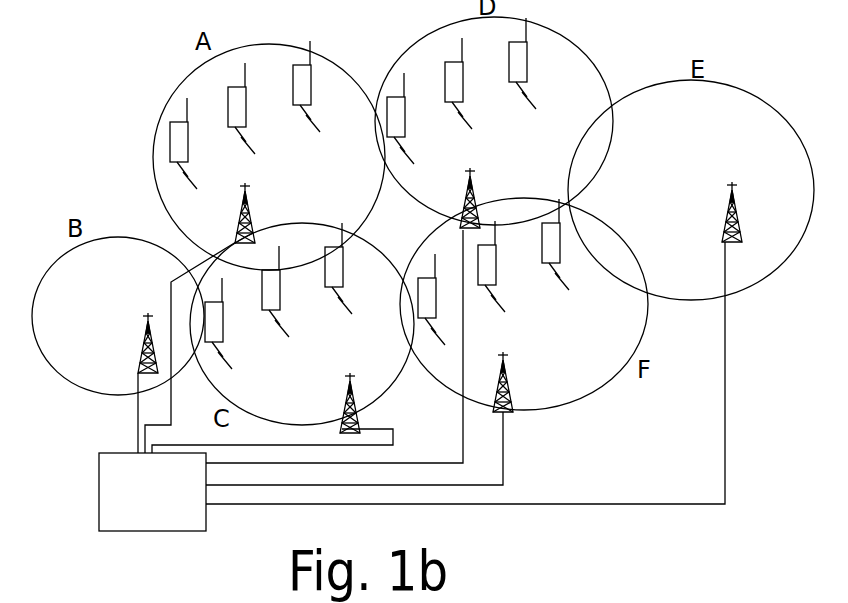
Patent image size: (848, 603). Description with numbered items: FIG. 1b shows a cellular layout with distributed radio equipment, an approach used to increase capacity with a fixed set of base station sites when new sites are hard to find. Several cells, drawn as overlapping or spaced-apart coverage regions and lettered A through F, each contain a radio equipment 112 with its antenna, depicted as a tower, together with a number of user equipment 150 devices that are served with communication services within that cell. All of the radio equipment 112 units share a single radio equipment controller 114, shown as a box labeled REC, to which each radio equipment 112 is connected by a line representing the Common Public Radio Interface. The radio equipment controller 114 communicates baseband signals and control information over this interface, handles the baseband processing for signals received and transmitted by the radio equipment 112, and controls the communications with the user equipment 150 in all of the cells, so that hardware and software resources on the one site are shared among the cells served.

The radio equipment 112 is at (403, 307).
The user equipment 150 is at (385, 213).
The radio equipment controller 114 is at (121, 492).